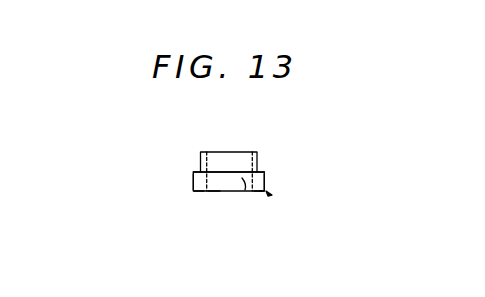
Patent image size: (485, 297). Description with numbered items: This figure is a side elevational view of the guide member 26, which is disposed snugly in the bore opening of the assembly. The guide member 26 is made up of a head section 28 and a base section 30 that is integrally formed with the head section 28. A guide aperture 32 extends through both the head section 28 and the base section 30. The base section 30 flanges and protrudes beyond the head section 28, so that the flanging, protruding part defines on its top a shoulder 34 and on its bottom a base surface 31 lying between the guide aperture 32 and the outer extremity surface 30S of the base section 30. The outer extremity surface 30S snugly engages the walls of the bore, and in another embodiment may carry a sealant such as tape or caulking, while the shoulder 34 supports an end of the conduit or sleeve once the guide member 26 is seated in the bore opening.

The guide member 26 is at (267, 193).
The head section 28 is at (261, 167).
The base section 30 is at (246, 193).
The outer extremity surface 30S is at (193, 183).
The base surface 31 is at (197, 193).
The guide aperture 32 is at (214, 193).
The shoulder 34 is at (198, 172).